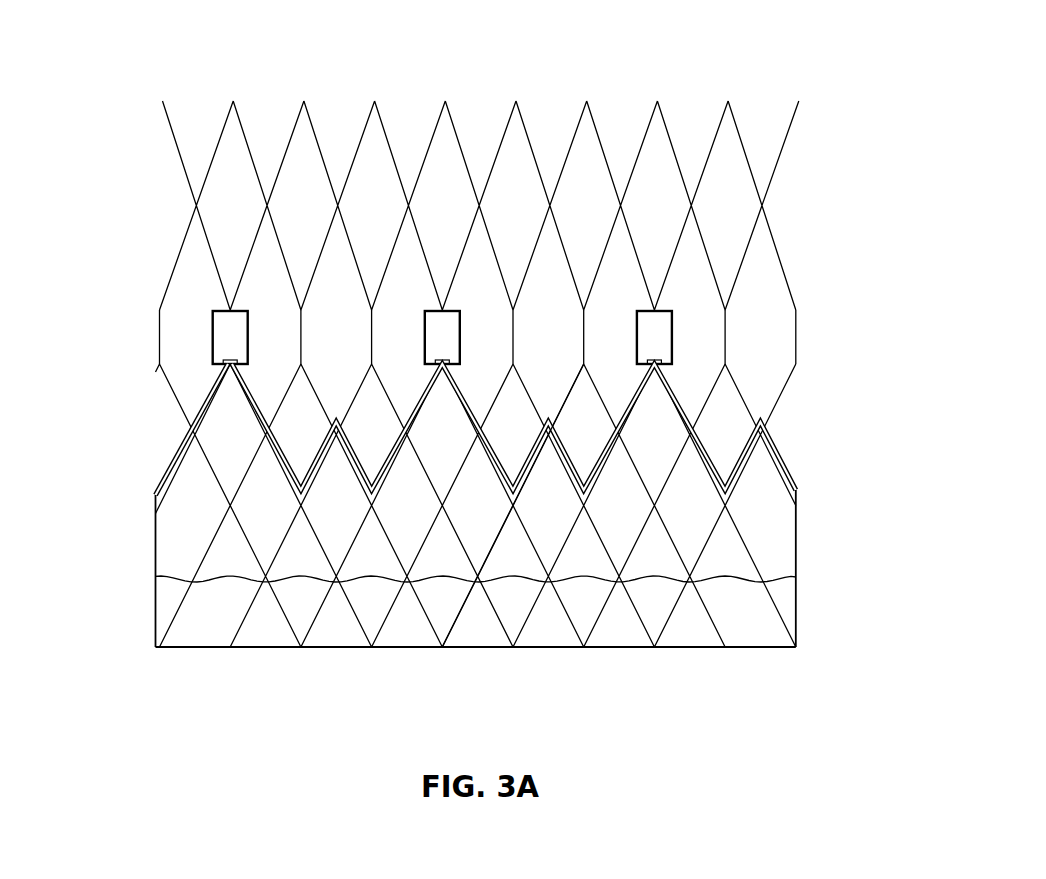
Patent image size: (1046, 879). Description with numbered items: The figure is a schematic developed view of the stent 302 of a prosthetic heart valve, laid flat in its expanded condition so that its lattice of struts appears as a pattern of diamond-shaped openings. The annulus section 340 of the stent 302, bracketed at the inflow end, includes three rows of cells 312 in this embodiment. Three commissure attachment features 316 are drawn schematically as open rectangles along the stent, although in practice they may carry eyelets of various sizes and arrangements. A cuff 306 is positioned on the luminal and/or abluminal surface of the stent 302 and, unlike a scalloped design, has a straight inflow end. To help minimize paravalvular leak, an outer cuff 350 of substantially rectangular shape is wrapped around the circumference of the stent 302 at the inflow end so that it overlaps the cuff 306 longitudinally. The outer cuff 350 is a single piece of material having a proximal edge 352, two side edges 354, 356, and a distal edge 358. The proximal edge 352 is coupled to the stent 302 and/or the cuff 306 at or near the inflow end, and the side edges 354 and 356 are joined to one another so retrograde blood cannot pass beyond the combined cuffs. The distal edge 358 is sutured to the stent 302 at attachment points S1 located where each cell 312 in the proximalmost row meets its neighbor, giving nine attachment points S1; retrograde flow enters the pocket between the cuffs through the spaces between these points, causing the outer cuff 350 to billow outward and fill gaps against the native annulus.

The stent 302 is at (157, 52).
The cuff 306 is at (168, 463).
The cells 312 is at (288, 432).
The commissure attachment features 316 is at (225, 335).
The annulus section 340 is at (827, 363).
The outer cuff 350 is at (151, 593).
The proximal edge 352 is at (272, 648).
The side edge 354 is at (150, 621).
The side edge 356 is at (795, 620).
The distal edge 358 is at (572, 578).
The attachment points S1 is at (663, 576).